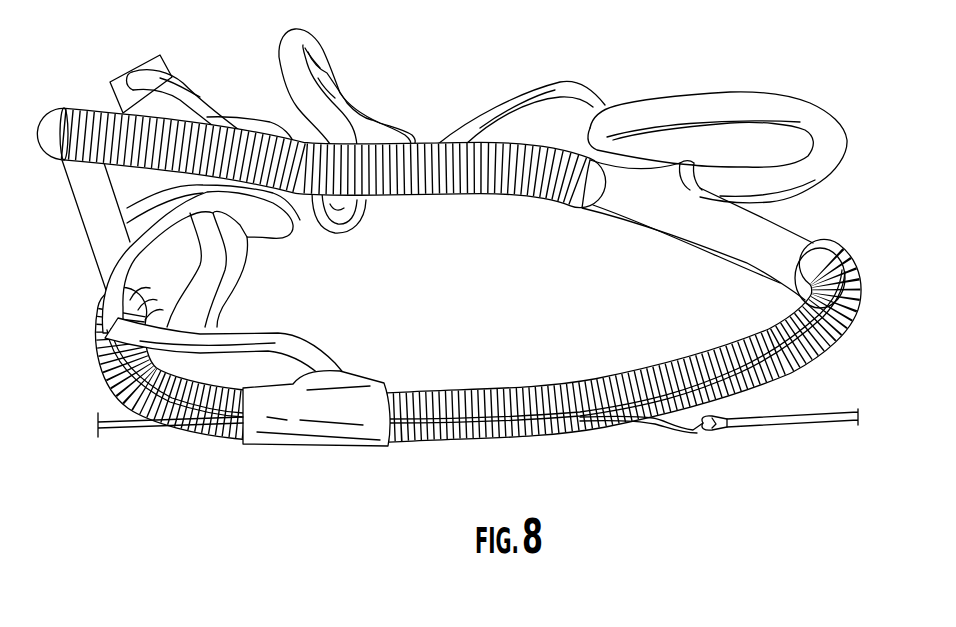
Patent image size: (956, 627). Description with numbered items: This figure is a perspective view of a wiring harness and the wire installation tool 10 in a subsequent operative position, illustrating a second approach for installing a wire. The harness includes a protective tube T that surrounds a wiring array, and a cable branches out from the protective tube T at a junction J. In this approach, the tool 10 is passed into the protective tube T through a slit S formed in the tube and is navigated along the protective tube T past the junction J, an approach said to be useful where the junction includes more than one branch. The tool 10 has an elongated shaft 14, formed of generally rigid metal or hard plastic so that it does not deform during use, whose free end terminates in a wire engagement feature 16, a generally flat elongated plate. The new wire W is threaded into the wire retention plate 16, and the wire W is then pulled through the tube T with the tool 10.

The protective tube T is at (674, 352).
The slit S is at (721, 380).
The new wire W is at (674, 434).
The wire installation tool 10 is at (484, 425).
The elongated shaft 14 is at (800, 426).
The wire engagement feature 16 is at (725, 431).
The junction J is at (343, 432).